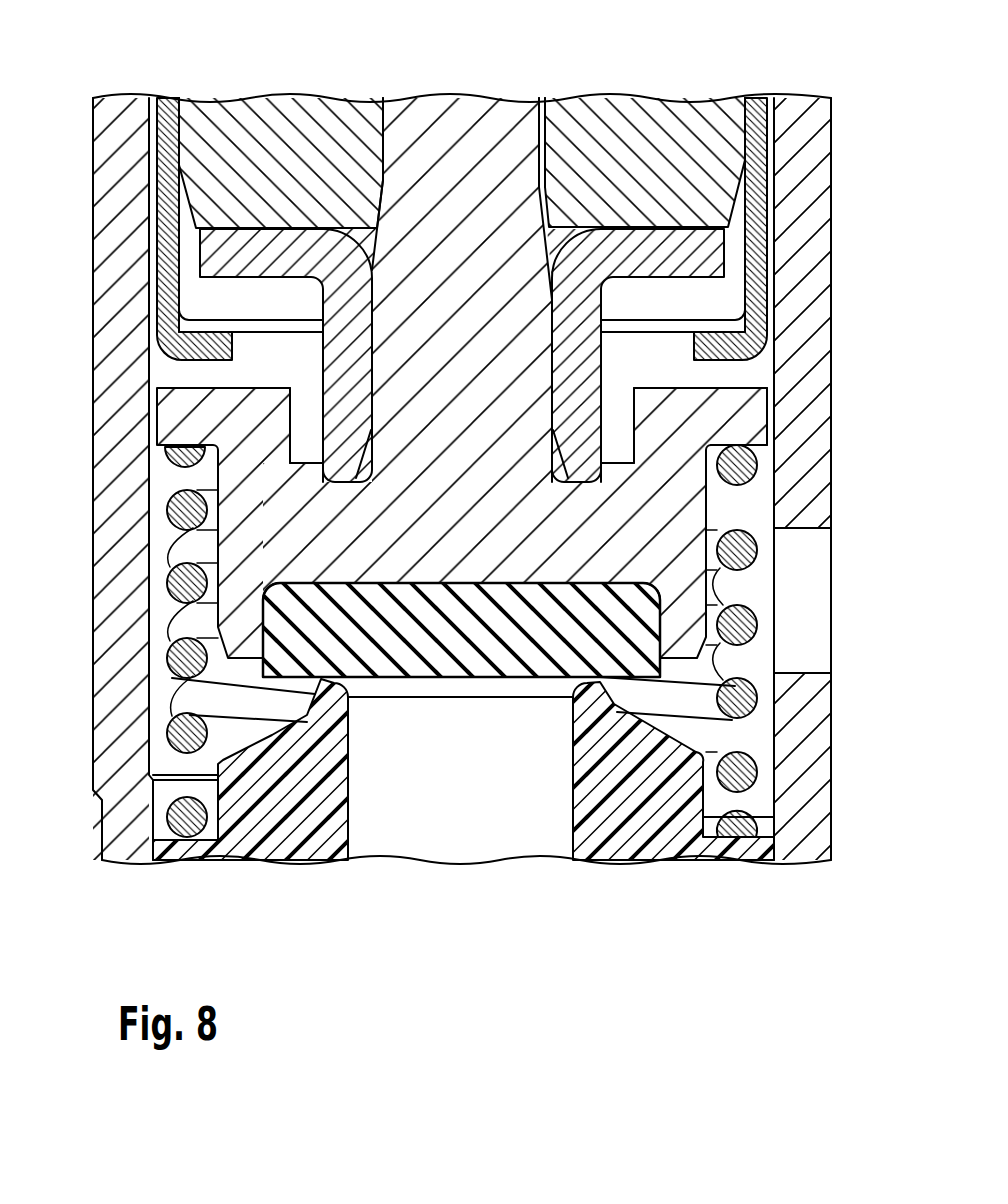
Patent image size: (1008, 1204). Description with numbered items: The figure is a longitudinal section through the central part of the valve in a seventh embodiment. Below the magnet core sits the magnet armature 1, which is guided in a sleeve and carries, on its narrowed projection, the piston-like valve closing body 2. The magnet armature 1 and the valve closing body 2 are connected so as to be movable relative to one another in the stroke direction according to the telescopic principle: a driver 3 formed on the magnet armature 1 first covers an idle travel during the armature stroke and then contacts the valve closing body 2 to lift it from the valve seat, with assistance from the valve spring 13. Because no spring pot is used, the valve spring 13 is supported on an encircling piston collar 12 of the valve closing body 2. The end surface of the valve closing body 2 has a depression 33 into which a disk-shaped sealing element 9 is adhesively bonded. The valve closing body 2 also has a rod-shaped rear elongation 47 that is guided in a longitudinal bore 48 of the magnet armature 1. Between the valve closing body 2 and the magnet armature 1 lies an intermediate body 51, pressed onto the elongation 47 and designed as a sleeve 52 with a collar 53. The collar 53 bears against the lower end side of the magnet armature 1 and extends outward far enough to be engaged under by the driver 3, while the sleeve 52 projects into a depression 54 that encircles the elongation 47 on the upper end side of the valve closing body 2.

The magnet armature 1 is at (692, 142).
The valve closing body 2 is at (665, 502).
The driver 3 is at (165, 198).
The sealing element 9 is at (424, 640).
The piston collar 12 is at (747, 420).
The valve spring 13 is at (740, 623).
The depression 33 is at (498, 585).
The rear elongation 47 is at (500, 290).
The longitudinal bore 48 is at (538, 158).
The intermediate body 51 is at (729, 250).
The sleeve 52 is at (343, 302).
The collar 53 is at (230, 252).
The depression 54 is at (307, 410).